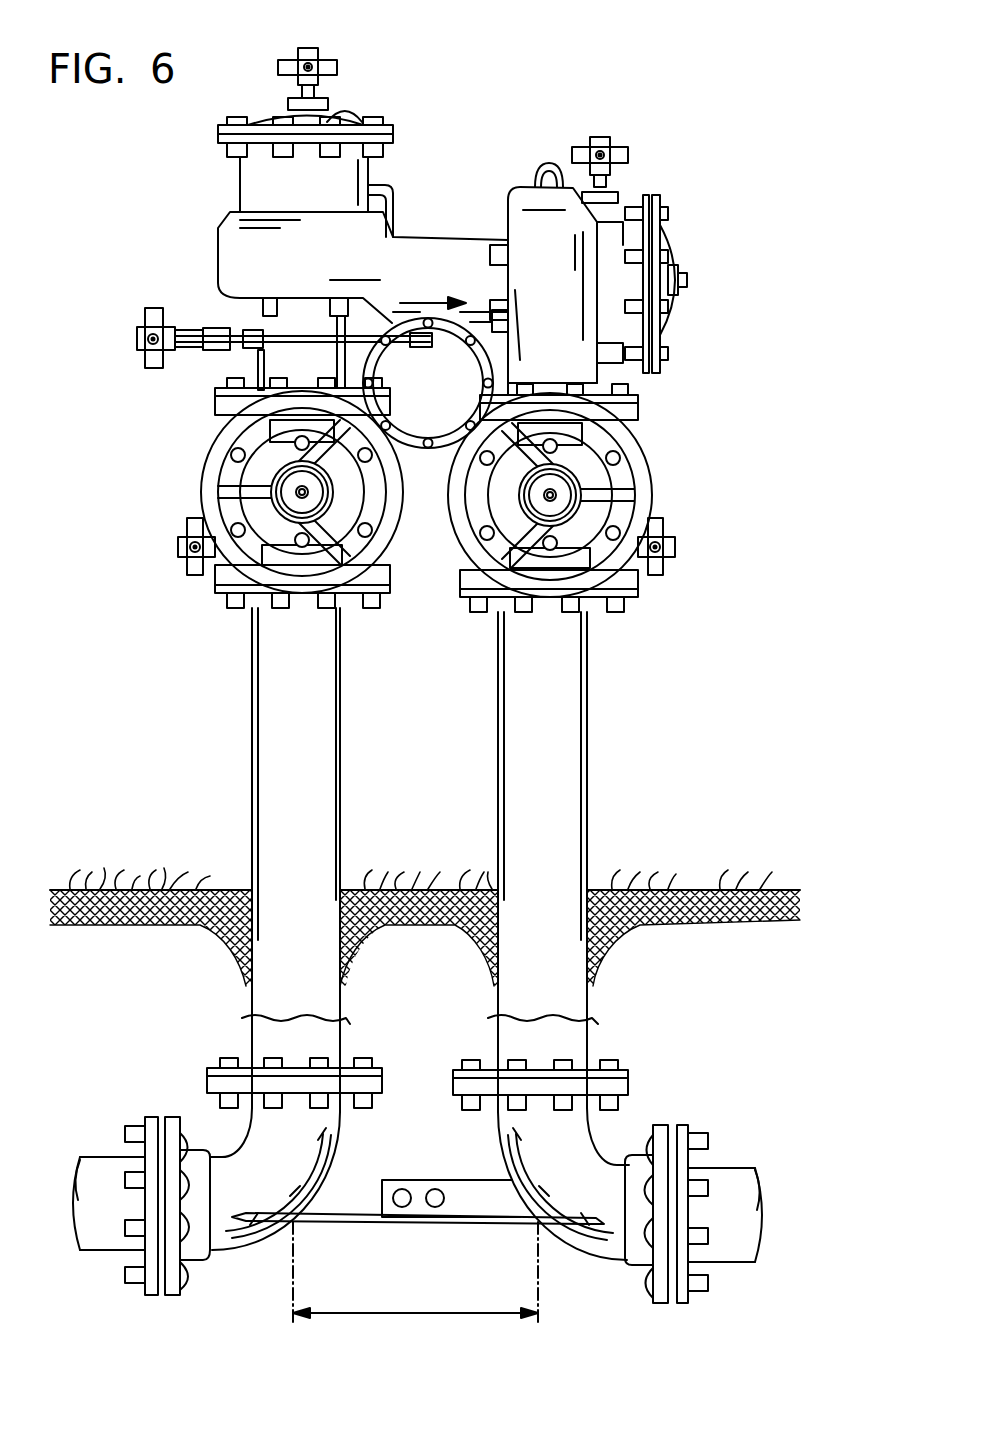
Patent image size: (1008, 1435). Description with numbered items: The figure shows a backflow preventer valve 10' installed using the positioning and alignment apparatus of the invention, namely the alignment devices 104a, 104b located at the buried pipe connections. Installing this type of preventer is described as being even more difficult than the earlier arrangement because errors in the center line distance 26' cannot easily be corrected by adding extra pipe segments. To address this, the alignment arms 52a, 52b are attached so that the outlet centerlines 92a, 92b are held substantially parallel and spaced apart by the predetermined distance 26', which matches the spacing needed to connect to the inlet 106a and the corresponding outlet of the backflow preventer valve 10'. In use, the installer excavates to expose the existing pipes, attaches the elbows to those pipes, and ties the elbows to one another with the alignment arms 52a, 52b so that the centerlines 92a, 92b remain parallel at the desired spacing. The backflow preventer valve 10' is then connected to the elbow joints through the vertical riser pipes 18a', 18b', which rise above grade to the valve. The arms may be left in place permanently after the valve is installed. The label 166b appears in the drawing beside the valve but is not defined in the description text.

The backflow preventer valve 10' is at (438, 322).
The inlet 106a is at (215, 580).
The test cock valve 166b is at (635, 582).
The pipe 18a' is at (339, 860).
The pipe 18b' is at (585, 862).
The alignment arm 52a is at (345, 1180).
The alignment arm 52b is at (470, 1190).
The outlet centerline 92a is at (296, 1270).
The outlet centerline 92b is at (538, 1256).
The center line distance 26' is at (418, 1274).
The alignment device 104a is at (238, 1254).
The alignment device 104b is at (595, 1260).